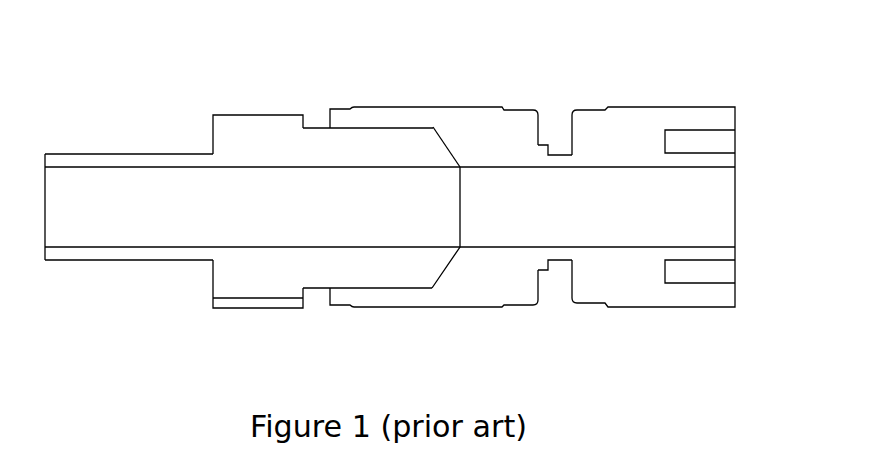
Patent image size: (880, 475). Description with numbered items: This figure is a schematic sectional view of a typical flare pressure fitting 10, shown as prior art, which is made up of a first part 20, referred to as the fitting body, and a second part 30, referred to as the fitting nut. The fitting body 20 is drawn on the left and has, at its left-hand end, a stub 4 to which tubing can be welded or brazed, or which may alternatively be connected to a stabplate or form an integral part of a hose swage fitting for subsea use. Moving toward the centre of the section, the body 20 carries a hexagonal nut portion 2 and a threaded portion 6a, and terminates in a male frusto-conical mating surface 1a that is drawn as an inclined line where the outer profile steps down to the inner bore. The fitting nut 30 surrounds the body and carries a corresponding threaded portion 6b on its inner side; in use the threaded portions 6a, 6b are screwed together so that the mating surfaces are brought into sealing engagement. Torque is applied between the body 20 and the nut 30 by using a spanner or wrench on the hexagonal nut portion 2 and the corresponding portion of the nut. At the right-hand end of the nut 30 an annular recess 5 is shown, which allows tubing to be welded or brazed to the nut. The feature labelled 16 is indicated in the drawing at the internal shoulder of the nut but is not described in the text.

The male frusto-conical mating surface 1a is at (454, 111).
The hexagonal nut portion 2 is at (309, 168).
The stub 4 is at (154, 152).
The annular recess 5 is at (722, 143).
The threaded portion 6a is at (434, 98).
The threaded portion 6b is at (434, 314).
The pressure fitting 10 is at (653, 160).
The inner shoulder 16 is at (436, 265).
The first part 20 is at (258, 175).
The second part 30 is at (529, 263).